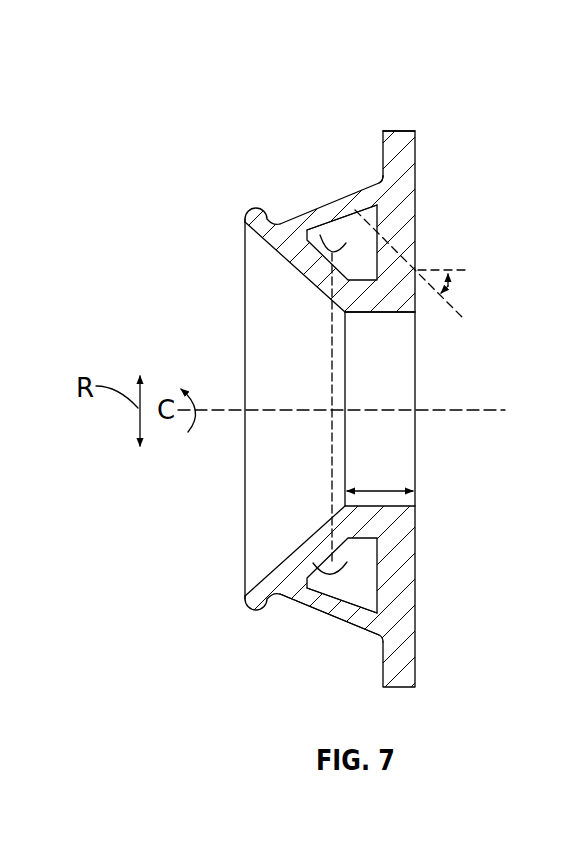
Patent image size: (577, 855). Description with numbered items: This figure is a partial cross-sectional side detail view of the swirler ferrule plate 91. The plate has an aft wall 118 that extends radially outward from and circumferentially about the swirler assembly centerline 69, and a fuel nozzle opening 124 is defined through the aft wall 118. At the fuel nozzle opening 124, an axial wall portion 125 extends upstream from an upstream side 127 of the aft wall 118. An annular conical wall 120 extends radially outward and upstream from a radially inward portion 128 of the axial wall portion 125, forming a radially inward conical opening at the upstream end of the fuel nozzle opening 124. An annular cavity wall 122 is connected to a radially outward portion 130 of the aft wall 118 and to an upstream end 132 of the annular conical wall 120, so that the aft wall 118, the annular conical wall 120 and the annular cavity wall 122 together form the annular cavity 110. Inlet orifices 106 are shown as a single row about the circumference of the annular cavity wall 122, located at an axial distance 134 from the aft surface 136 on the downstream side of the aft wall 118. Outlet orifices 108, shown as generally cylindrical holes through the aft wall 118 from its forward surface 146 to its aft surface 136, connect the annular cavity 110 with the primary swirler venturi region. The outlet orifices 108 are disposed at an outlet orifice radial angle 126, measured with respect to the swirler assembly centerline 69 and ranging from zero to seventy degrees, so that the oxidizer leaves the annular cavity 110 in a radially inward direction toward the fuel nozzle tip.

The swirler ferrule plate 91 is at (288, 380).
The upstream side of the aft wall 127 is at (380, 137).
The radially outward portion of the aft wall 130 is at (374, 173).
The aft wall 118 is at (416, 156).
The annular cavity wall 122 is at (349, 197).
The upstream end of the annular conical wall 132 is at (277, 214).
The annular conical wall 120 is at (266, 230).
The annular cavity 110 is at (366, 222).
The outlet orifice 108 is at (362, 250).
The outlet orifice radial angle 126 is at (450, 286).
The inlet orifice 106 is at (330, 257).
The fuel nozzle opening 124 is at (404, 361).
The axial wall portion 125 is at (344, 330).
The radially inward portion of the axial wall portion 128 is at (395, 318).
The axial distance 134 is at (394, 487).
The swirler assembly centerline 69 is at (466, 412).
The aft surface of the aft wall 136 is at (415, 637).
The forward surface of the aft wall 146 is at (362, 628).